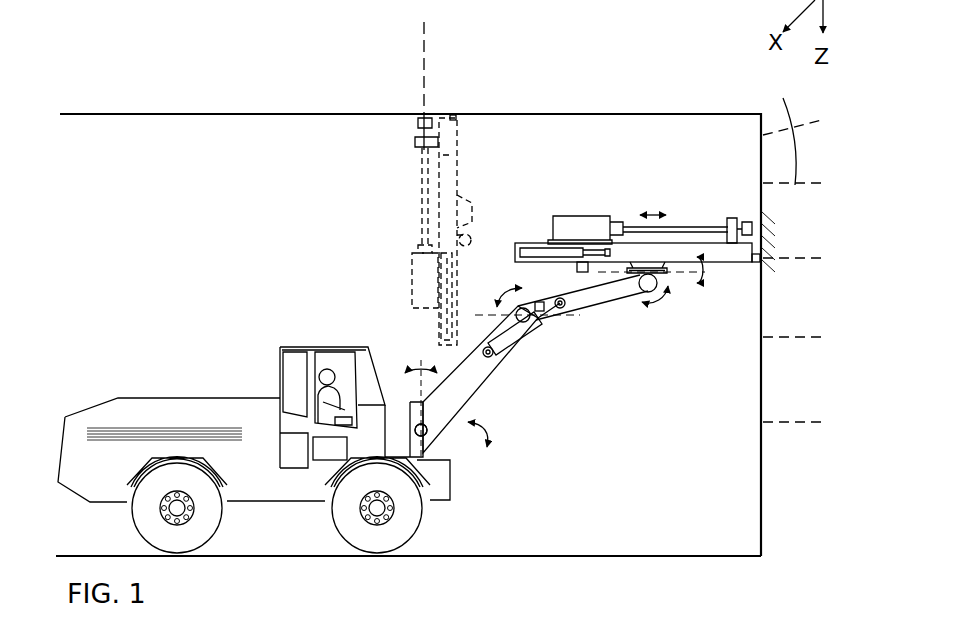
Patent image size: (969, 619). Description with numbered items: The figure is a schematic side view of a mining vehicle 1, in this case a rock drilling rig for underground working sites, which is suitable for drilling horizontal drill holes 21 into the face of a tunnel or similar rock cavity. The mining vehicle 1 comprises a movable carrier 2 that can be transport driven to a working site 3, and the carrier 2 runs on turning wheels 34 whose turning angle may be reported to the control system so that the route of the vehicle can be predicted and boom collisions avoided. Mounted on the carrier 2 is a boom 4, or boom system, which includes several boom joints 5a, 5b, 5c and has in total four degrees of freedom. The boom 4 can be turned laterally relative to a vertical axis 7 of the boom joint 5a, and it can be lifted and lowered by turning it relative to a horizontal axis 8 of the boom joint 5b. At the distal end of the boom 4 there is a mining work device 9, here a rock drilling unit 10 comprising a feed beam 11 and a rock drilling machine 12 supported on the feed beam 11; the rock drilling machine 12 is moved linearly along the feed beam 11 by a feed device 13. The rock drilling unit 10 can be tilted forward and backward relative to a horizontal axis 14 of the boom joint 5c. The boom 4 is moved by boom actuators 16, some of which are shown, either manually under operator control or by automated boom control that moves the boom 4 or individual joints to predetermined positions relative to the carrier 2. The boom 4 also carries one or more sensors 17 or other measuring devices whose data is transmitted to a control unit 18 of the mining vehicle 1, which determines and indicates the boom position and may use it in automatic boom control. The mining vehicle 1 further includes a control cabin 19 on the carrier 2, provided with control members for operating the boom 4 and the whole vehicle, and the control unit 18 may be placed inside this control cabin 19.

The mining vehicle 1 is at (178, 210).
The movable carrier 2 is at (122, 373).
The working site 3 is at (345, 192).
The boom 4 is at (541, 378).
The boom joint 5a is at (471, 458).
The boom joint 5b is at (530, 302).
The boom joint 5c is at (653, 320).
The vertical axis 7 is at (418, 398).
The horizontal axis 8 is at (478, 314).
The mining work device 9 is at (604, 88).
The rock drilling unit 10 is at (661, 90).
The feed beam 11 is at (732, 258).
The rock drilling machine 12 is at (578, 217).
The feed device 13 is at (530, 245).
The horizontal axis 14 is at (693, 280).
The boom actuators 16 is at (523, 335).
The sensors 17 is at (585, 273).
The control unit 18 is at (320, 460).
The control cabin 19 is at (328, 346).
The drill holes 21 is at (426, 68).
The turning wheels 34 is at (137, 520).